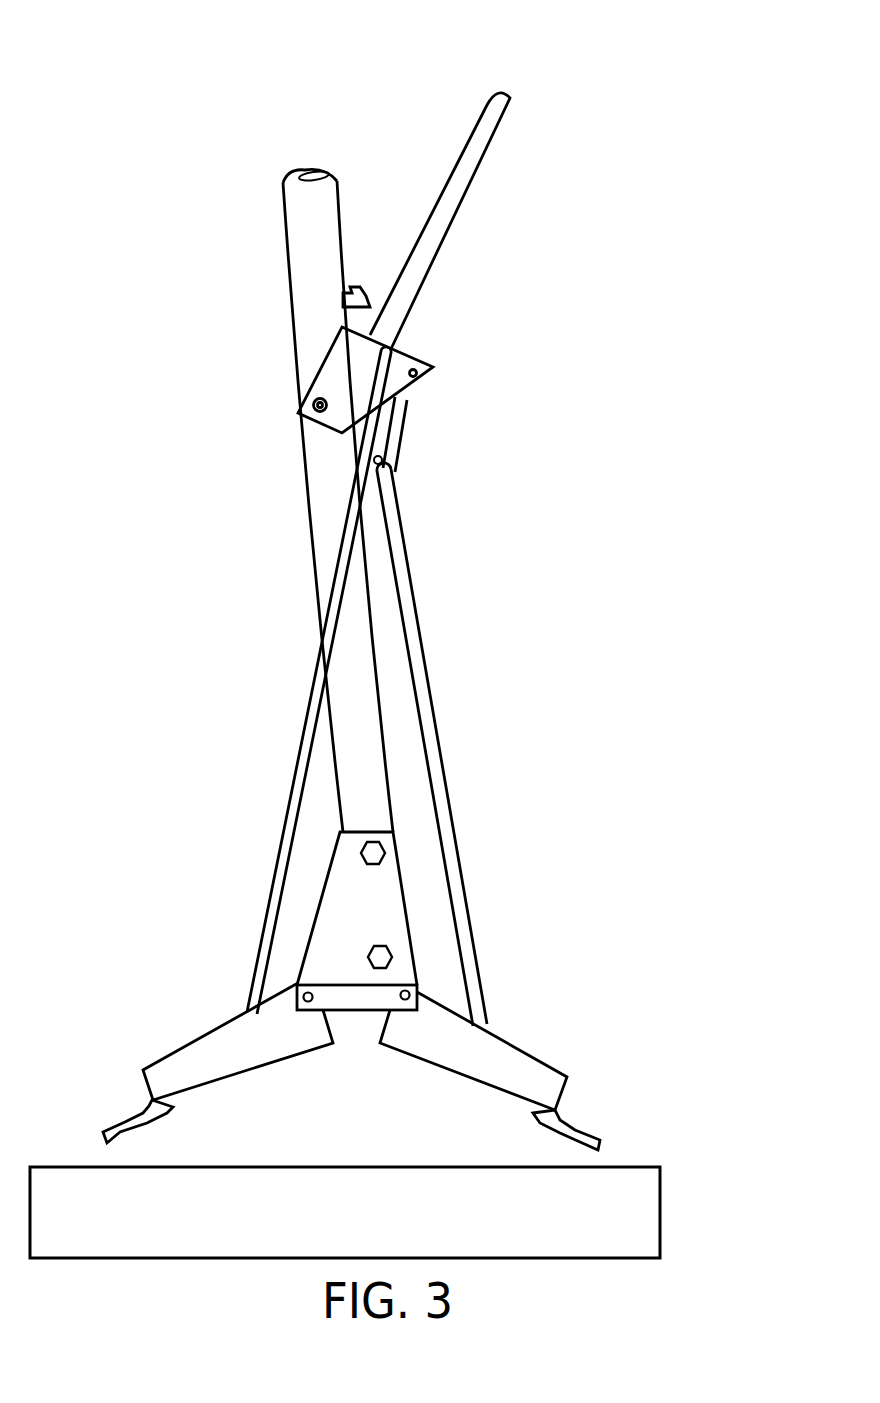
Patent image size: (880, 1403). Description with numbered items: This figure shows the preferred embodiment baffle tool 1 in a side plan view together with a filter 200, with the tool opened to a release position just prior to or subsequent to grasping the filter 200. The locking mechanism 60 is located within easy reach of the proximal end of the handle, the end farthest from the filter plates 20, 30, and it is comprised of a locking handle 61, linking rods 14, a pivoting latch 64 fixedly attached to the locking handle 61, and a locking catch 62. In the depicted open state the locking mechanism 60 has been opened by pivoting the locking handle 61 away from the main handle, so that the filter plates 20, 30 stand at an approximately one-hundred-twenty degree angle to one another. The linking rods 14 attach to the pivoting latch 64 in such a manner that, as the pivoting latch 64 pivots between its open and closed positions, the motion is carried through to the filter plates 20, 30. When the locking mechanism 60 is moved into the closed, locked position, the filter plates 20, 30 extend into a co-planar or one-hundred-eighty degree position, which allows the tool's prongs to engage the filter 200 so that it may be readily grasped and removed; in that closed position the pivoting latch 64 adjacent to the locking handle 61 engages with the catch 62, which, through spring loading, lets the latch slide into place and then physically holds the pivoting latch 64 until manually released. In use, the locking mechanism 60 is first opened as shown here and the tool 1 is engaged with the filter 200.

The baffle tool 1 is at (672, 53).
The linking rods 14 is at (311, 697).
The filter plate 20 is at (459, 1053).
The filter plate 30 is at (282, 1055).
The locking mechanism 60 is at (472, 305).
The locking handle 61 is at (448, 207).
The locking catch 62 is at (362, 287).
The pivoting latch 64 is at (433, 367).
The filter 200 is at (660, 1166).